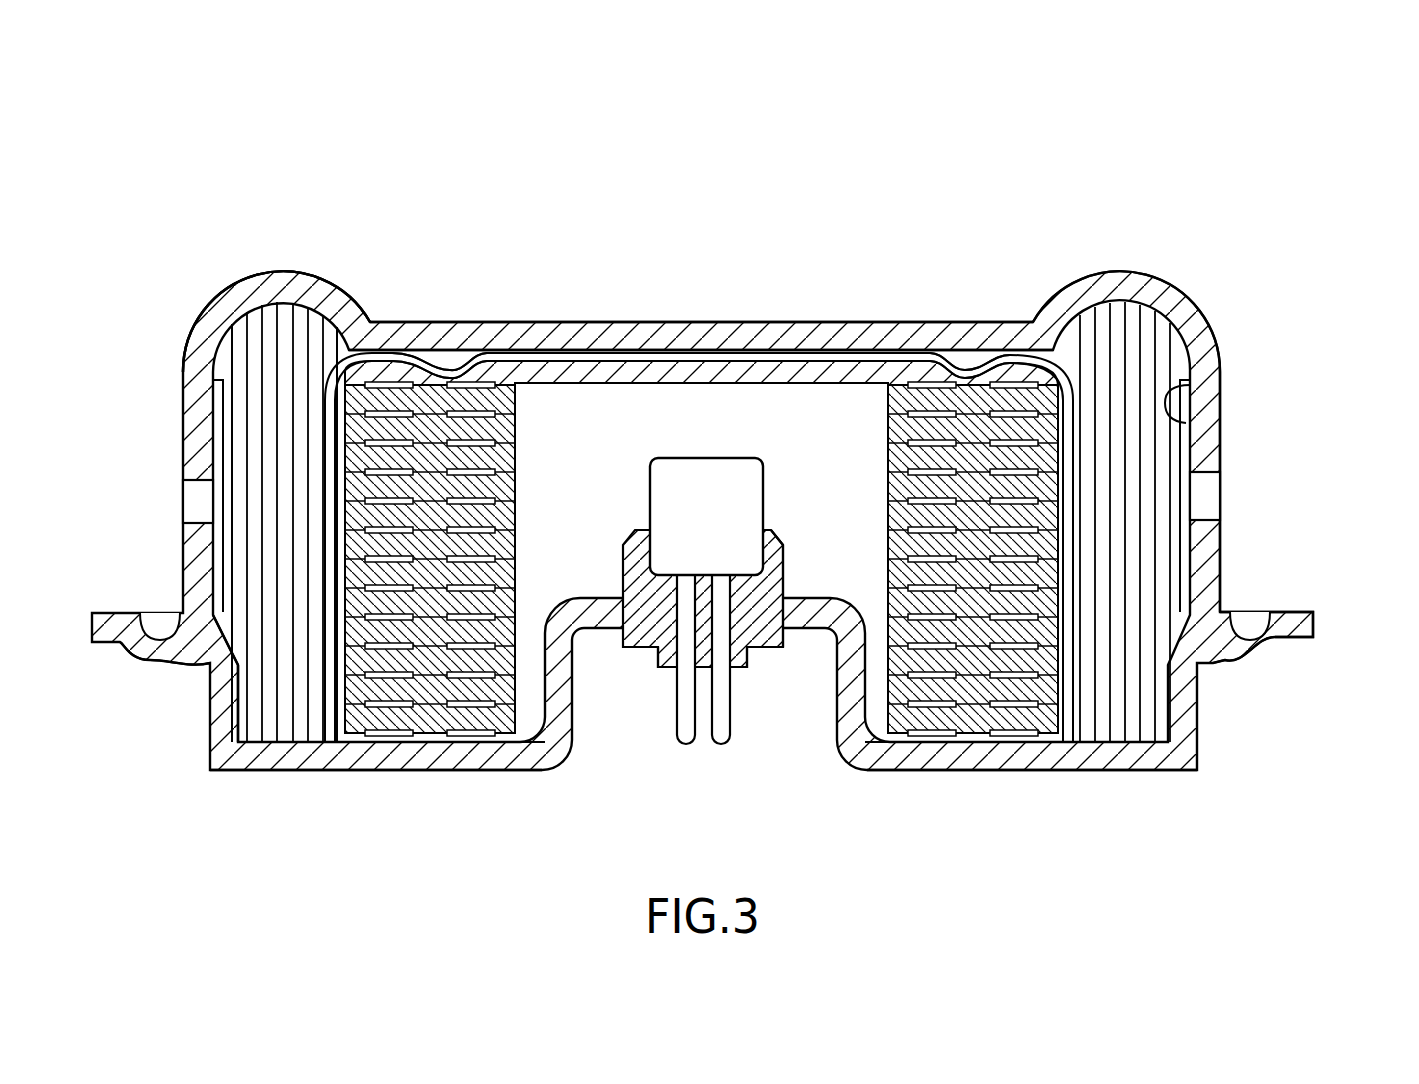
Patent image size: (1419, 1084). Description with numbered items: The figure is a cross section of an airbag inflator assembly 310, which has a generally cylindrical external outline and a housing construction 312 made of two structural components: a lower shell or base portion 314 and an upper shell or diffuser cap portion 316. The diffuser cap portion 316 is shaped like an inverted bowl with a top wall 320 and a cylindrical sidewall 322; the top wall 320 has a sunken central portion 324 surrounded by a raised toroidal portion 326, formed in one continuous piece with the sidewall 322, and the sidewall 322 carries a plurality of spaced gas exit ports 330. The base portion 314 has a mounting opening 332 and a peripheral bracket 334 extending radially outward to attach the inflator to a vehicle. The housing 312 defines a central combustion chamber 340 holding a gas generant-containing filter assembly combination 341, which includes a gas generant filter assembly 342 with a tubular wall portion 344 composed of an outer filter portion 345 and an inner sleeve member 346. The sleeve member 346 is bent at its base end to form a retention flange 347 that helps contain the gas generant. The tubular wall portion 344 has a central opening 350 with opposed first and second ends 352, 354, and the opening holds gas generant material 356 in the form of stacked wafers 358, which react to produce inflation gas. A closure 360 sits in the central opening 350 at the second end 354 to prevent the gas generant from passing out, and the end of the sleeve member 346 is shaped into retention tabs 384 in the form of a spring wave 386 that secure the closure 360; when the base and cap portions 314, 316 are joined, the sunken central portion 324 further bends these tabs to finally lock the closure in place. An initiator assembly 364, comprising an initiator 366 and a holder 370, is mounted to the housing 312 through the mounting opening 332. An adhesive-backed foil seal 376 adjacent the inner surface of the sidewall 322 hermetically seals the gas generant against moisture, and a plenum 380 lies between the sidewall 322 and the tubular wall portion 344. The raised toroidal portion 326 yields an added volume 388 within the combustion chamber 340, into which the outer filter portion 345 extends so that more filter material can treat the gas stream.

The inflator assembly 310 is at (1225, 205).
The housing construction 312 is at (1214, 306).
The lower shell or base portion 314 is at (1163, 784).
The upper shell or diffuser cap portion 316 is at (1228, 424).
The top wall 320 is at (332, 278).
The cylindrical sidewall 322 is at (1222, 565).
The sunken central portion 324 is at (740, 322).
The raised toroidal portion 326 is at (270, 272).
The gas exit ports 330 is at (200, 497).
The mounting opening 332 is at (645, 650).
The peripheral bracket 334 is at (1298, 612).
The combustion chamber 340 is at (830, 410).
The gas generant-containing filter assembly combination 341 is at (426, 618).
The gas generant filter assembly 342 is at (243, 410).
The tubular wall portion 344 is at (270, 694).
The outer filter portion 345 is at (1120, 660).
The inner sleeve member 346 is at (418, 365).
The retention flange 347 is at (378, 742).
The central opening 350 is at (1060, 548).
The first end 352 is at (1000, 735).
The second end 354 is at (912, 365).
The gas generant material 356 is at (372, 690).
The stacked wafers 358 is at (495, 660).
The closure 360 is at (650, 352).
The initiator assembly 364 is at (742, 684).
The initiator 366 is at (730, 526).
The holder 370 is at (775, 655).
The adhesive-backed foil seal 376 is at (1188, 396).
The plenum 380 is at (220, 575).
The retention tabs 384 is at (458, 370).
The spring wave 386 is at (384, 358).
The added volume 388 is at (258, 330).